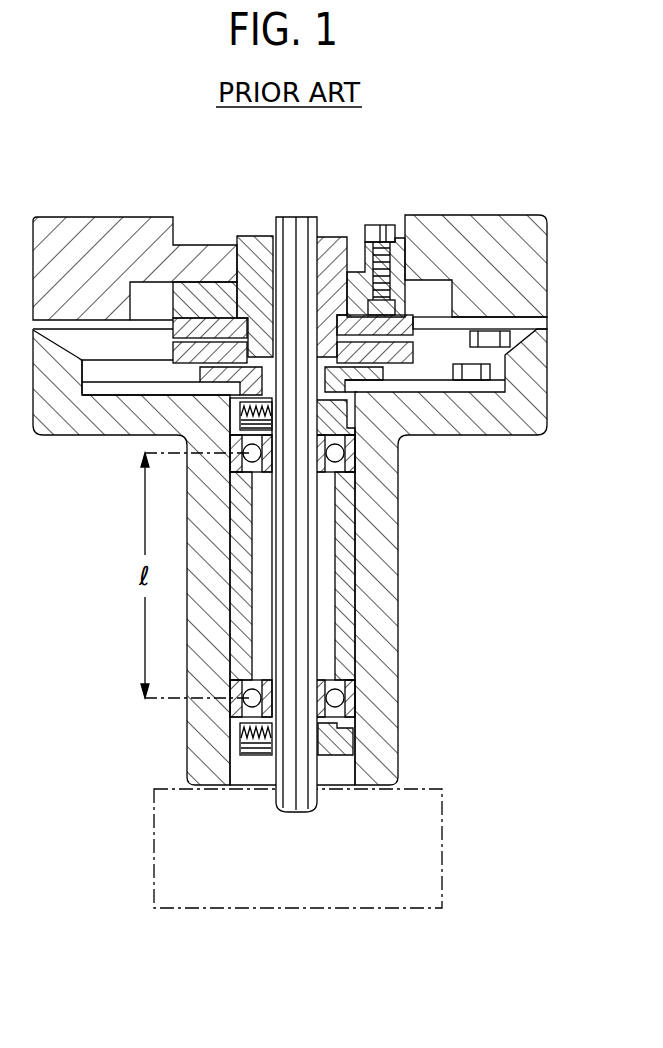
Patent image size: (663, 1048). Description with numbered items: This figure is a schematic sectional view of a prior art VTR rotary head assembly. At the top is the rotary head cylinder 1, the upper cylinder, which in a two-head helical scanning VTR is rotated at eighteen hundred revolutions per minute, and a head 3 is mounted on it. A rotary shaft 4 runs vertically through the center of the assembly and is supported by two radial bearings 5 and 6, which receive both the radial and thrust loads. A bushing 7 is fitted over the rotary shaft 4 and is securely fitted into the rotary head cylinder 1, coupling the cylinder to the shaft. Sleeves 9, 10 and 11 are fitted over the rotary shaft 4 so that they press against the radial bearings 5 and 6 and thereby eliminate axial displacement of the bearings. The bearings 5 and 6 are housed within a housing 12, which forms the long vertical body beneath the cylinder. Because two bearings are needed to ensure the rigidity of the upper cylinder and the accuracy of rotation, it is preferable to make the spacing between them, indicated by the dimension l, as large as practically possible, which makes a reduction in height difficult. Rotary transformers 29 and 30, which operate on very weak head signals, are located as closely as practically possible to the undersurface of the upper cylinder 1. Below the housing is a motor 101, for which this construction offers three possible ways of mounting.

The rotary head cylinder 1 is at (67, 227).
The head 3 is at (537, 322).
The rotary shaft 4 is at (303, 643).
The radial bearing 5 is at (353, 698).
The radial bearing 6 is at (350, 458).
The bushing 7 is at (251, 240).
The sleeve 9 is at (352, 742).
The sleeve 10 is at (340, 413).
The sleeve 11 is at (357, 567).
The housing 12 is at (207, 602).
The rotary transformer 29 is at (387, 325).
The rotary transformer 30 is at (397, 350).
The motor 101 is at (445, 855).